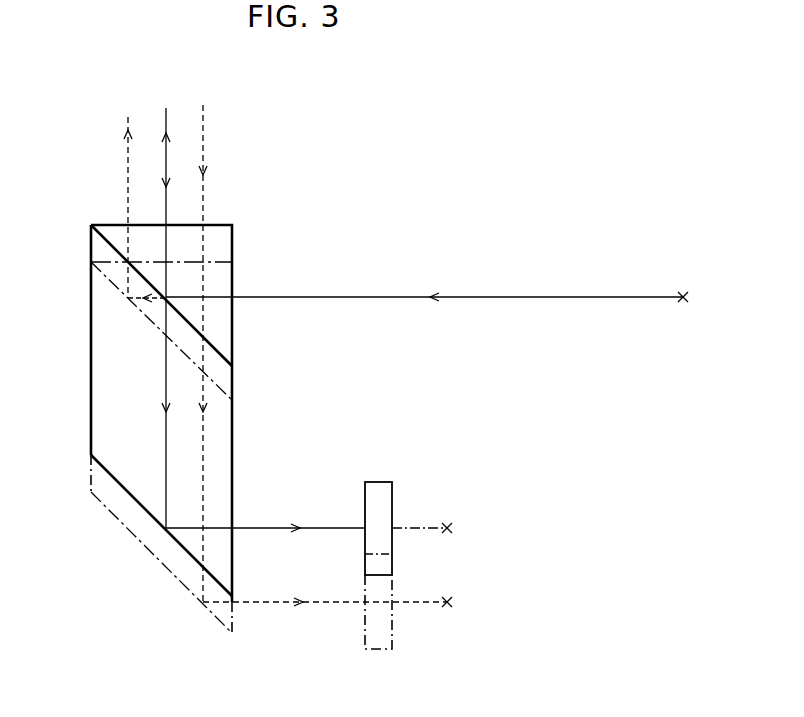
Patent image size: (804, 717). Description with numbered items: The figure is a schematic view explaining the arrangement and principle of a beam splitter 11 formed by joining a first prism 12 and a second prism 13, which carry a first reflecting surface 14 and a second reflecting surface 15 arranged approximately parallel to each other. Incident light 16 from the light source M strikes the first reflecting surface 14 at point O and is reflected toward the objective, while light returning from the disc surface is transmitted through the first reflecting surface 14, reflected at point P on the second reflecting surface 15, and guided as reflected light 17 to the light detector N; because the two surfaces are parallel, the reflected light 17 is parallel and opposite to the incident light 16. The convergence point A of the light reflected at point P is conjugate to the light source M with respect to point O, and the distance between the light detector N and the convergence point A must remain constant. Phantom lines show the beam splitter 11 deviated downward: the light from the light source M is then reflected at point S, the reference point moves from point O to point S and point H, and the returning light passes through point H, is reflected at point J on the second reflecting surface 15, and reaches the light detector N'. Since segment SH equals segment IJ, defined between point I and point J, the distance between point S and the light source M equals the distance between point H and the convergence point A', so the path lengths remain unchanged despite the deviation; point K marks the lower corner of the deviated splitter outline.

The beam splitter 11 is at (80, 278).
The first prism 12 is at (225, 243).
The second prism 13 is at (223, 446).
The first reflecting surface 14 is at (105, 237).
The second reflecting surface 15 is at (108, 468).
The incident light 16 is at (482, 293).
The reflected light 17 is at (312, 525).
The light source M is at (680, 288).
The light detector N is at (402, 515).
The light detector N' is at (401, 633).
The convergence point A is at (467, 511).
The convergence point A' is at (349, 602).
The reference point H is at (203, 293).
The point O is at (167, 297).
The point S is at (128, 298).
The point P is at (167, 527).
The point I is at (205, 527).
The point J is at (203, 603).
The point K is at (235, 603).